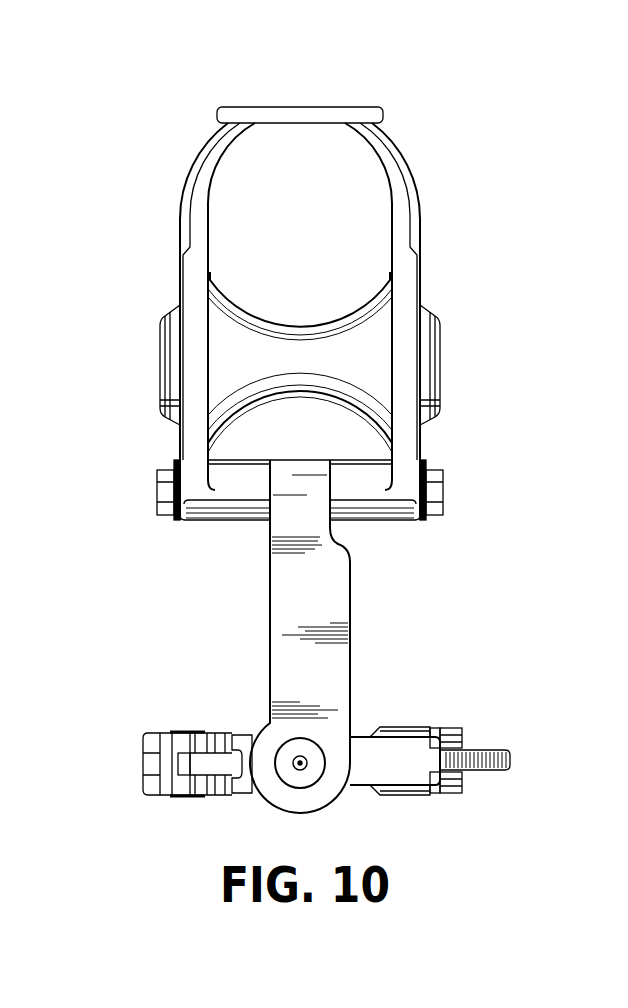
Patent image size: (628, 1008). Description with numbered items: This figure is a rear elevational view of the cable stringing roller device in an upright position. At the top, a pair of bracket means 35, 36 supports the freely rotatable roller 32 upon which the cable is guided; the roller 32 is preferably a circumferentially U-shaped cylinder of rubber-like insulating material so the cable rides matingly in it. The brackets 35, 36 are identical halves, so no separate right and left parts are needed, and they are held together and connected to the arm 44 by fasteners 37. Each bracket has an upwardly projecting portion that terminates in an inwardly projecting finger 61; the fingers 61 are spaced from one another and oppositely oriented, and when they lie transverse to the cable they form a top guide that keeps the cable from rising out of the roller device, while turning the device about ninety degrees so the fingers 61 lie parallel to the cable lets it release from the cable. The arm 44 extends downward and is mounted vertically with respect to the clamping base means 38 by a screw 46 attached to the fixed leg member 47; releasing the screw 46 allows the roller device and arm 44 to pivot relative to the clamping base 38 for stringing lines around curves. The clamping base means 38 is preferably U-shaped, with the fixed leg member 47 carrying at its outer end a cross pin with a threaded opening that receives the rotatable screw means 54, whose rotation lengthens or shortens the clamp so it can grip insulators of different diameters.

The roller 32 is at (268, 322).
The bracket means 35 is at (410, 443).
The bracket means 36 is at (190, 436).
The fasteners 37 is at (522, 508).
The clamping base means 38 is at (206, 716).
The arm 44 is at (327, 593).
The screw 46 is at (290, 770).
The fixed leg member 47 is at (398, 770).
The screw means 54 is at (508, 768).
The fingers 61 is at (377, 112).